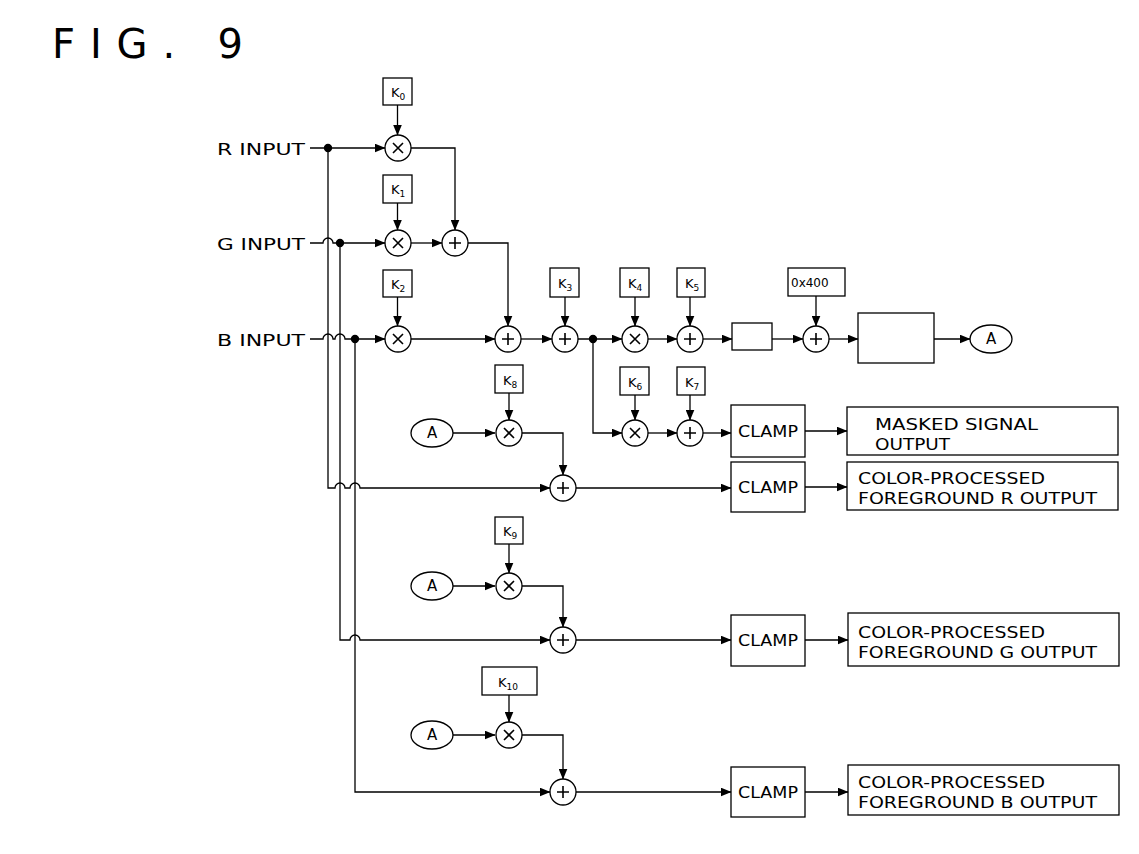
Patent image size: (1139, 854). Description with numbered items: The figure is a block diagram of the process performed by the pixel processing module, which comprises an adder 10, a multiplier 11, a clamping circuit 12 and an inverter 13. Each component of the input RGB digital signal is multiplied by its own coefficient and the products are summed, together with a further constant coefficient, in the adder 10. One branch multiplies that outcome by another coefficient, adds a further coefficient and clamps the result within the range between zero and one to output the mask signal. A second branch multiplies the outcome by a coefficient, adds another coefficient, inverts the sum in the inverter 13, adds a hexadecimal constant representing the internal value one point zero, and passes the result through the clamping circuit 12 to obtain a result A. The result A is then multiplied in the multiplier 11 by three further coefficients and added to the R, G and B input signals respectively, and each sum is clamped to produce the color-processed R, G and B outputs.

The adder 10 is at (466, 233).
The multiplier 11 is at (518, 577).
The clamping circuit 12 is at (887, 313).
The inverter 13 is at (744, 323).